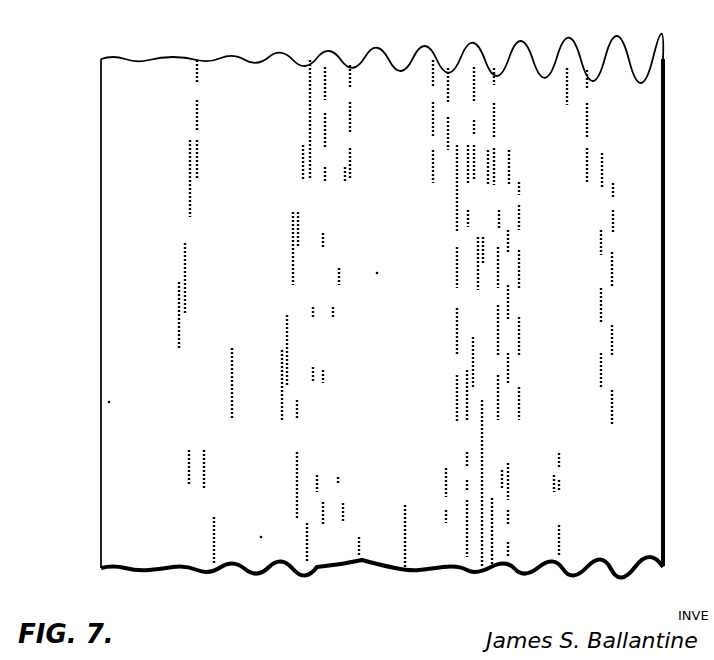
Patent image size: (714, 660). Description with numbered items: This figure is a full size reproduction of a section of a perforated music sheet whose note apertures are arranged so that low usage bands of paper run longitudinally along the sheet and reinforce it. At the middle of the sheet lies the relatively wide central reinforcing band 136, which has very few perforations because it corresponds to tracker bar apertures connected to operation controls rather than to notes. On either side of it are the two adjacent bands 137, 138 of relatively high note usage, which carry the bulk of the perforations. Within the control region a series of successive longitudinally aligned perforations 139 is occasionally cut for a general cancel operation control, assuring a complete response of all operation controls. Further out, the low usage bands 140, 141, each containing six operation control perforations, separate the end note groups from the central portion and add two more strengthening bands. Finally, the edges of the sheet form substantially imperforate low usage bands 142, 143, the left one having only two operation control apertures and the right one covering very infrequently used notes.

The central reinforcing band 136 is at (387, 65).
The band of relatively high usage 137 is at (330, 62).
The band of relatively high usage 138 is at (460, 63).
The series of successive longitudinally aligned perforations 139 is at (405, 553).
The low usage band 140 is at (244, 63).
The low usage band 141 is at (530, 63).
The low usage band 142 is at (117, 62).
The low usage band 143 is at (629, 61).